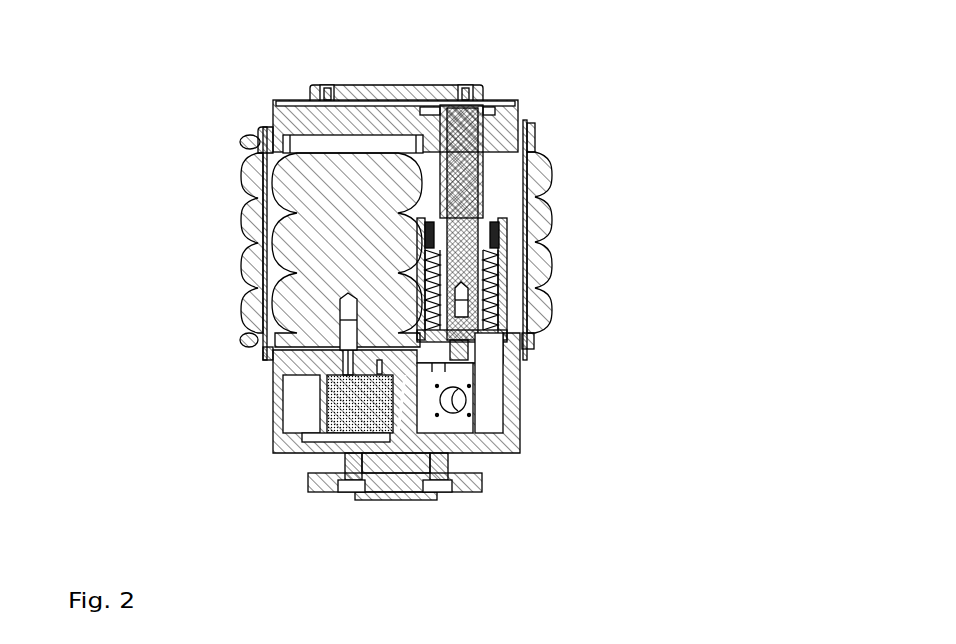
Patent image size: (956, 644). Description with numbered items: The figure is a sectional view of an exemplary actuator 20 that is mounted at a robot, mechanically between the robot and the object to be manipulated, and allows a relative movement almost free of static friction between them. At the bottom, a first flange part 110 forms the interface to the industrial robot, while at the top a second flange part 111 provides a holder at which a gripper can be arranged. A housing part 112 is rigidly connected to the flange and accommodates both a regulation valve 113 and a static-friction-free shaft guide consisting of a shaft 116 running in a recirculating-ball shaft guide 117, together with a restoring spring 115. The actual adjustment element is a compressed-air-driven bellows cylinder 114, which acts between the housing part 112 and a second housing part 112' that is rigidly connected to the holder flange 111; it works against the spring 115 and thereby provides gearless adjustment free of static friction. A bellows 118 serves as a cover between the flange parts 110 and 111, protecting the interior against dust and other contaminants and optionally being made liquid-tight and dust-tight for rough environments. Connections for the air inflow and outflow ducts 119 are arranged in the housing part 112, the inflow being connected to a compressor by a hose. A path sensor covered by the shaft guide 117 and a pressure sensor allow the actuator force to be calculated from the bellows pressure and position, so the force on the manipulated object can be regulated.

The actuator 20 is at (194, 58).
The first flange part 110 is at (400, 500).
The second flange part 111 is at (337, 100).
The housing part 112 is at (317, 393).
The second housing part 112' is at (322, 118).
The regulation valve 113 is at (358, 402).
The bellows cylinder 114 is at (300, 238).
The spring 115 is at (508, 290).
The shaft 116 is at (463, 198).
The shaft guide 117 is at (445, 161).
The bellows 118 is at (245, 308).
The air inflow and outflow ducts 119 is at (458, 398).